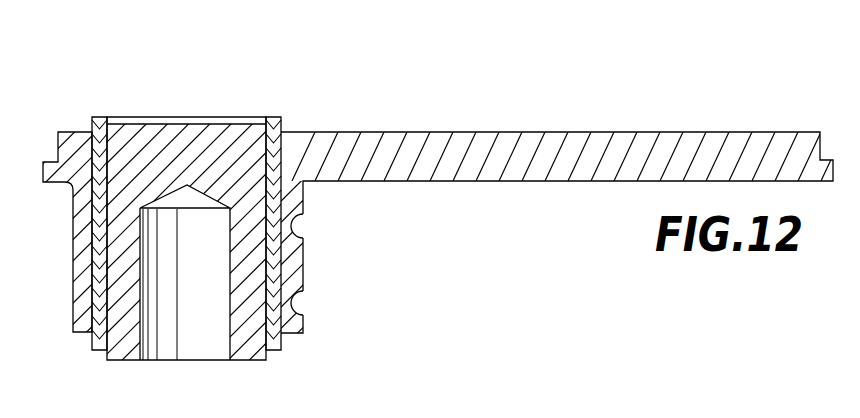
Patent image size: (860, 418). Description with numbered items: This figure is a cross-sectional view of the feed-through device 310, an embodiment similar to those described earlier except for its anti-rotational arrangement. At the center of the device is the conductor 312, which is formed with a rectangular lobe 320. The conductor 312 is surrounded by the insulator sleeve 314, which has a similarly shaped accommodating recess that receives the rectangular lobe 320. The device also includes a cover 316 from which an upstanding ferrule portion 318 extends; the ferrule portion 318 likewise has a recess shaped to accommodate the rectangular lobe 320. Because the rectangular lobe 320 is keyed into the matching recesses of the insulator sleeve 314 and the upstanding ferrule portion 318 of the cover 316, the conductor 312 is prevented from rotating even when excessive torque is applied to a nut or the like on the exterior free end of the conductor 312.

The feed-through device 310 is at (430, 209).
The conductor 312 is at (150, 138).
The insulator sleeve 314 is at (103, 120).
The cover 316 is at (572, 133).
The upstanding ferrule portion 318 is at (303, 268).
The rectangular lobe 320 is at (233, 140).